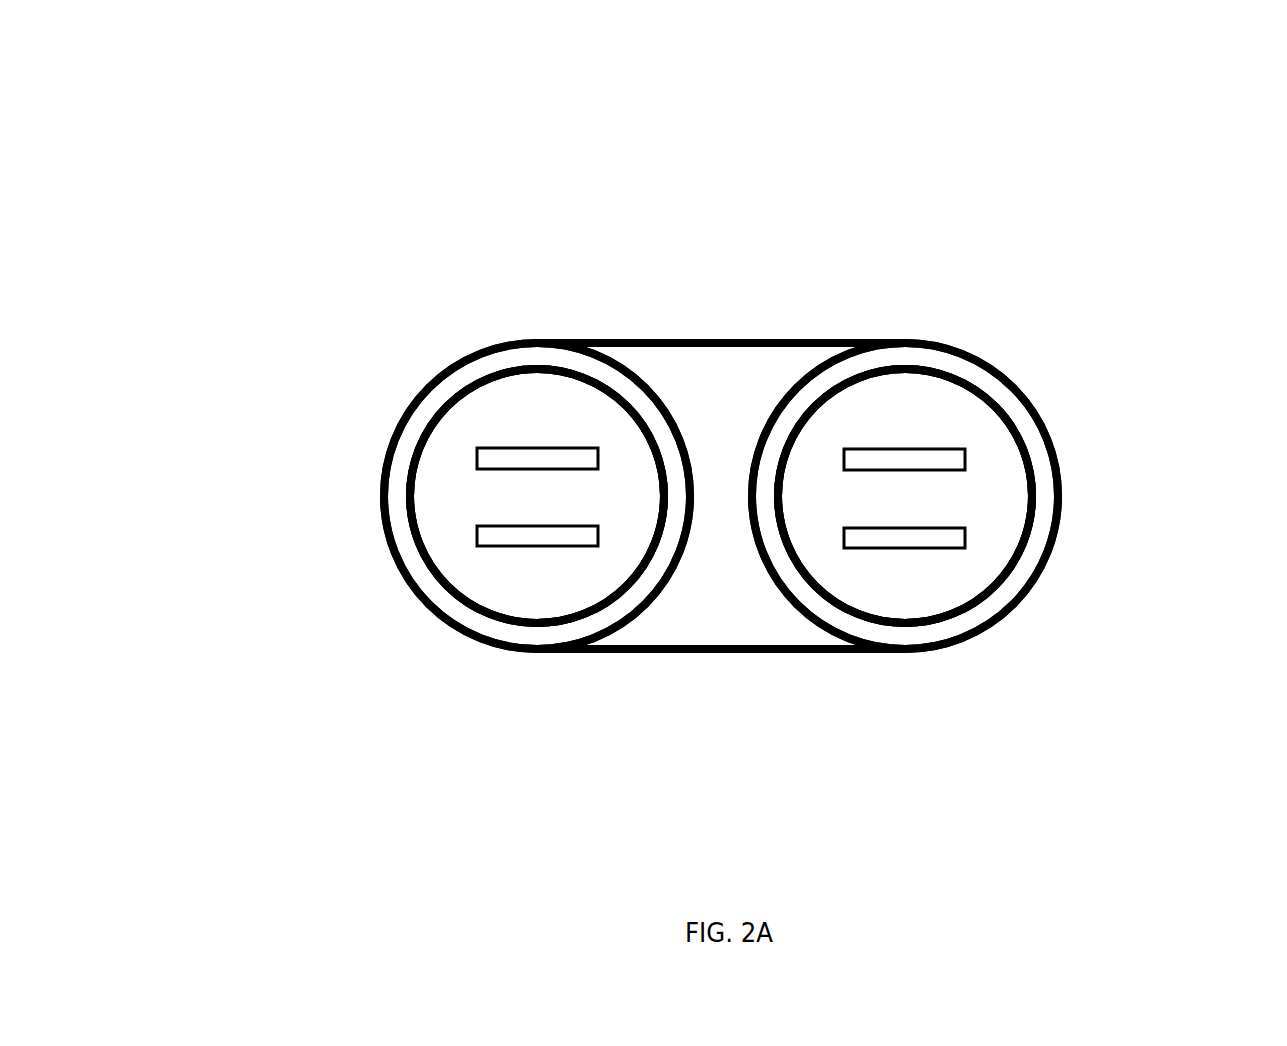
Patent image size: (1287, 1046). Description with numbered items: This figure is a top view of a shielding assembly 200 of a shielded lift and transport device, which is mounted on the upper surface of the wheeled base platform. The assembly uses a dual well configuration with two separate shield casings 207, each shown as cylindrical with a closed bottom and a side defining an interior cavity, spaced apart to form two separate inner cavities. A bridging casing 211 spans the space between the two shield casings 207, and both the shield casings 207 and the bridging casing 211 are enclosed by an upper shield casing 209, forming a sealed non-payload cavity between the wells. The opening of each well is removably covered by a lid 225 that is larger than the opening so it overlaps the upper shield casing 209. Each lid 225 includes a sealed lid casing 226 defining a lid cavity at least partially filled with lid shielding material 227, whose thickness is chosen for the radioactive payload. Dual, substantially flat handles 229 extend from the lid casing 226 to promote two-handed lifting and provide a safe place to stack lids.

The shielding assembly 200 is at (202, 118).
The shield casing 207 is at (497, 345).
The upper shield casing 209 is at (422, 408).
The bridging casing 211 is at (719, 345).
The lid 225 is at (408, 534).
The lid casing 226 is at (412, 485).
The lid shielding material 227 is at (417, 437).
The handle 229 is at (477, 533).